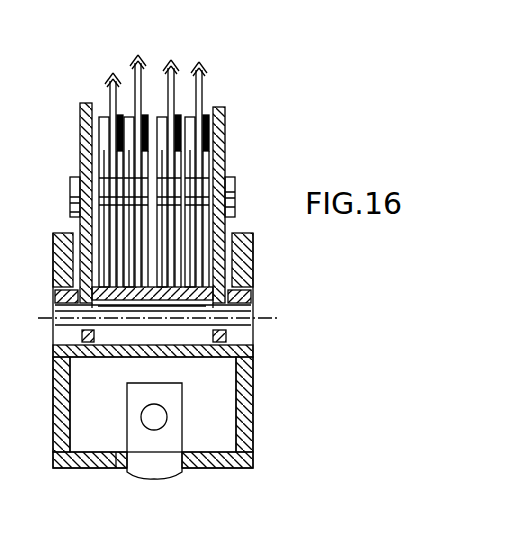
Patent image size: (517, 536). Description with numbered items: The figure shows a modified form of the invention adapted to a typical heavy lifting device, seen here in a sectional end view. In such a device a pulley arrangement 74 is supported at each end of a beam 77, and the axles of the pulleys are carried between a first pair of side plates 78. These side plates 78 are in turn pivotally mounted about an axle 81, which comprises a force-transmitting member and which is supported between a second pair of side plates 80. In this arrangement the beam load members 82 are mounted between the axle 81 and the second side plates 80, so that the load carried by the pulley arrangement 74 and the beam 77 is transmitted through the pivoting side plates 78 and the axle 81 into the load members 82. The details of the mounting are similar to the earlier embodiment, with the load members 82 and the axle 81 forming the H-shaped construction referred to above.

The pulley arrangement 74 is at (201, 154).
The beam 77 is at (253, 386).
The side plates 78 is at (81, 149).
The side plates 80 is at (252, 262).
The axle 81 is at (253, 323).
The beam load members 82 is at (251, 288).